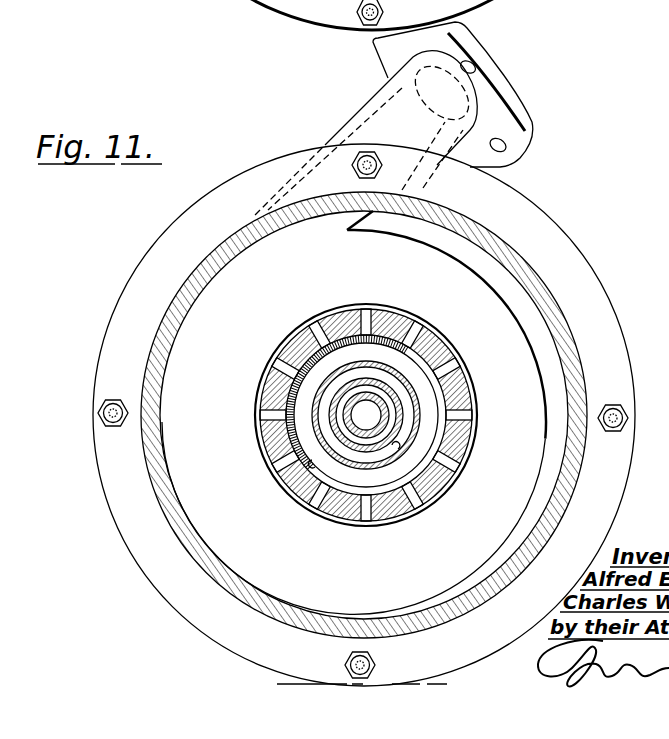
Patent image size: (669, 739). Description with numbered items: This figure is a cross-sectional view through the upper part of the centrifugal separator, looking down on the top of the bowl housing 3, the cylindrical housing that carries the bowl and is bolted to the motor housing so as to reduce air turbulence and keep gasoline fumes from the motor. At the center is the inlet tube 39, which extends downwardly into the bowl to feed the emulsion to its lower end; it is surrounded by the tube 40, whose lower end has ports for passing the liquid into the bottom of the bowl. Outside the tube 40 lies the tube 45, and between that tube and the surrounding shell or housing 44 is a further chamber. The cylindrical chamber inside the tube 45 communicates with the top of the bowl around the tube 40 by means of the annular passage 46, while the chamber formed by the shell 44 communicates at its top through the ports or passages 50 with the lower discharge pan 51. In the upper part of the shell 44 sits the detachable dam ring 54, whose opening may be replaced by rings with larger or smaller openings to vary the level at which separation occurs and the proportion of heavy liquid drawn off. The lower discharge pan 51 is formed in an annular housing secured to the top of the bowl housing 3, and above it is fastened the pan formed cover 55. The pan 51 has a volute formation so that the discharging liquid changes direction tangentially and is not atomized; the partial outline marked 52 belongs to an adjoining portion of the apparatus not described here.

The bowl housing 3 is at (167, 517).
The inlet tube 39 is at (390, 400).
The tube 40 is at (404, 406).
The shell or housing 44 is at (392, 497).
The tube 45 is at (440, 442).
The annular passage 46 is at (408, 453).
The ports or passages 50 is at (265, 357).
The lower discharge pan 51 is at (547, 473).
The casing of adjacent figure 52 is at (372, 15).
The dam ring 54 is at (300, 475).
The pan formed cover 55 is at (165, 310).